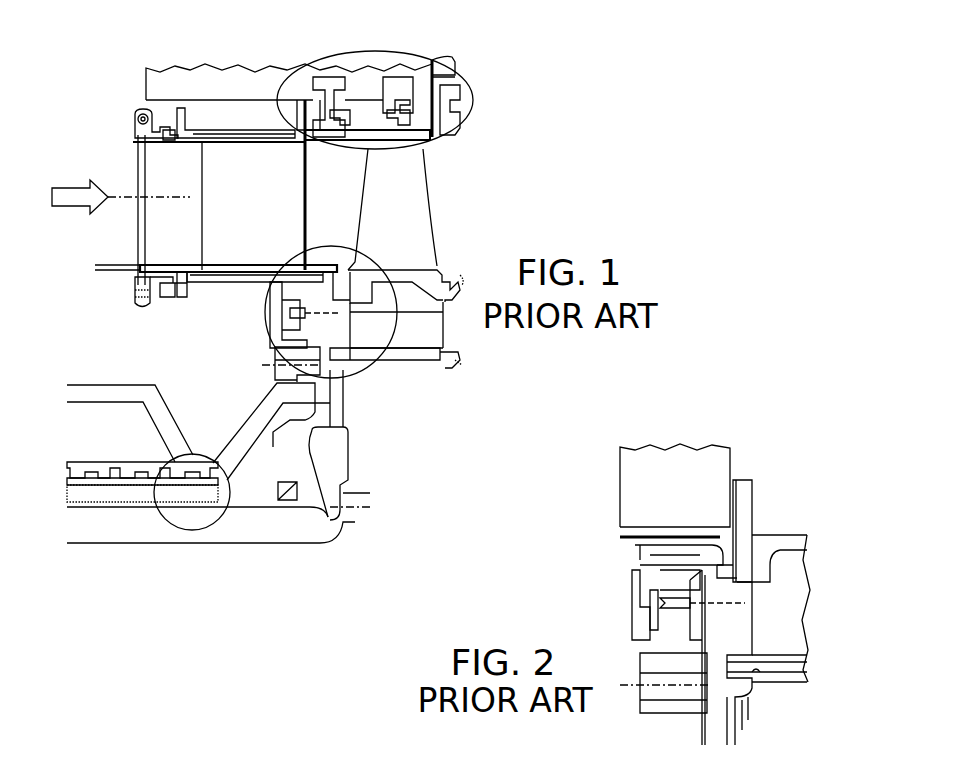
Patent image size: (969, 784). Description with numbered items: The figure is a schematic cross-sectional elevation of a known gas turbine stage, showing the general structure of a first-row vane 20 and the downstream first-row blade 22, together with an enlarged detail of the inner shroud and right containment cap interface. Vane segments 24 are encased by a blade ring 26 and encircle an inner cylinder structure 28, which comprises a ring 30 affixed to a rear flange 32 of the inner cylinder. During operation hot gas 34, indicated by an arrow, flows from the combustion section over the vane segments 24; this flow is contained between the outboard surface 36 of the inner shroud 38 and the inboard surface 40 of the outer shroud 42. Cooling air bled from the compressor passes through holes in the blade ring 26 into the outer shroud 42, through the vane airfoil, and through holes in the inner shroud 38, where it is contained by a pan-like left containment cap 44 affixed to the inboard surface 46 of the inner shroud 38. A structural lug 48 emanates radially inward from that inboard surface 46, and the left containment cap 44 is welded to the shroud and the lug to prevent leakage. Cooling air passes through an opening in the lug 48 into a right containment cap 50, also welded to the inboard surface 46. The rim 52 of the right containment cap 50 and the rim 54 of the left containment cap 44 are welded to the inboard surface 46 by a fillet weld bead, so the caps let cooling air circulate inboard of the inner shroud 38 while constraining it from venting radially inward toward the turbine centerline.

In FIG. 1, the Row 1 vane 20 is at (192, 312).
In FIG. 1, the Row 1 blade 22 is at (470, 190).
In FIG. 1, the vane segments 24 is at (282, 186).
In FIG. 2, the vane segments 24 is at (641, 499).
In FIG. 1, the blade ring 26 is at (243, 82).
In FIG. 1, the inner cylinder structure 28 is at (115, 465).
In FIG. 1, the ring 30 is at (285, 355).
In FIG. 2, the ring 30 is at (640, 650).
In FIG. 1, the rear flange 32 is at (250, 437).
In FIG. 1, the hot gas 34 is at (72, 192).
In FIG. 1, the outboard surface 36 is at (265, 270).
In FIG. 2, the outboard surface 36 is at (700, 537).
In FIG. 1, the inner shroud 38 is at (185, 262).
In FIG. 2, the inner shroud 38 is at (720, 556).
In FIG. 1, the inboard surface 40 is at (232, 140).
In FIG. 1, the outer shroud 42 is at (213, 132).
In FIG. 1, the left containment cap 44 is at (238, 282).
In FIG. 1, the inboard surface 46 is at (218, 283).
In FIG. 2, the inboard surface 46 is at (690, 543).
In FIG. 1, the structural lug 48 is at (290, 313).
In FIG. 2, the structural lug 48 is at (632, 590).
In FIG. 1, the right containment cap 50 is at (320, 318).
In FIG. 2, the right containment cap 50 is at (718, 578).
In FIG. 2, the rim 52 is at (745, 535).
In FIG. 1, the rim 54 is at (232, 265).